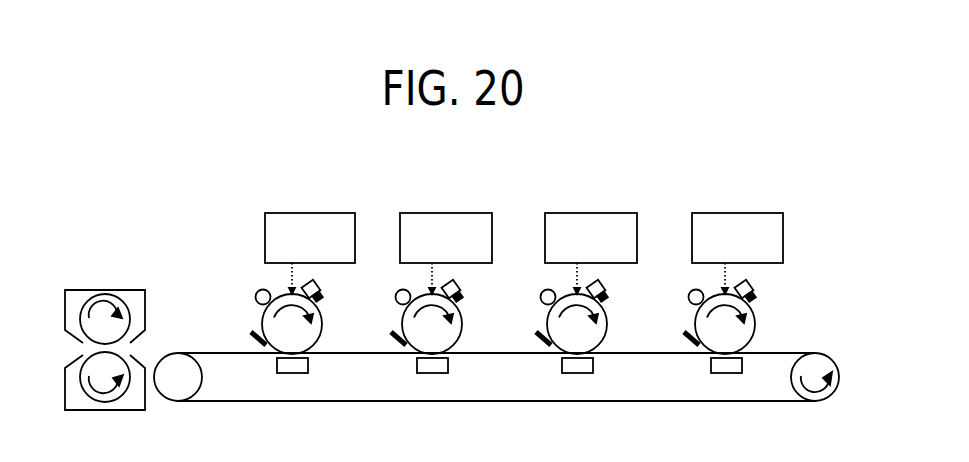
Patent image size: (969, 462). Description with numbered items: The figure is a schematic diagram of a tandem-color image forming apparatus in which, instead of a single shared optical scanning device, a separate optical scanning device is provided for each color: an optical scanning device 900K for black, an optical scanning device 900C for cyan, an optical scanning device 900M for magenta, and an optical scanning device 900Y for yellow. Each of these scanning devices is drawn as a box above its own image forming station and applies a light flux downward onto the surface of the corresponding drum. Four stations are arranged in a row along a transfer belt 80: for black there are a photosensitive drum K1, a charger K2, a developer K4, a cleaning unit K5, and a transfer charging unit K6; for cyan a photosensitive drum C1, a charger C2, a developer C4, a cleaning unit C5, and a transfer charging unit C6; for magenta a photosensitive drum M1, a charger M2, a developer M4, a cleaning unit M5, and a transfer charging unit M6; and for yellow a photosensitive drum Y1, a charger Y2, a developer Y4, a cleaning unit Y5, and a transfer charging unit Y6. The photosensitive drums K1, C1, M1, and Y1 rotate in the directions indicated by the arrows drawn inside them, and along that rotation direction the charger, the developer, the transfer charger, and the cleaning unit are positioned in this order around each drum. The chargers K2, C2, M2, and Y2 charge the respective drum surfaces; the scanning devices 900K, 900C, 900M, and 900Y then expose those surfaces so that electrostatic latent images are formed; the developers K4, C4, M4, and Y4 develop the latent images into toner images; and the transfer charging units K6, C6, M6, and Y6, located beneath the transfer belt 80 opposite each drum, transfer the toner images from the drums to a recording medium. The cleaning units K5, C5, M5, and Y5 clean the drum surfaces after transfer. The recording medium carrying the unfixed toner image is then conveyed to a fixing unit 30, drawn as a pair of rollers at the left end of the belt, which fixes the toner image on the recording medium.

The fixing unit 30 is at (116, 288).
The transfer belt 80 is at (357, 404).
The optical scanning device for black 900K is at (317, 212).
The optical scanning device for cyan 900C is at (453, 212).
The optical scanning device for magenta 900M is at (597, 212).
The optical scanning device for yellow 900Y is at (742, 212).
The photosensitive drum K1 is at (323, 332).
The charger K2 is at (256, 292).
The developer K4 is at (323, 288).
The cleaning unit K5 is at (253, 337).
The transfer charging unit K6 is at (288, 374).
The photosensitive drum C1 is at (463, 332).
The charger C2 is at (396, 297).
The developer C4 is at (463, 288).
The cleaning unit C5 is at (400, 347).
The transfer charging unit C6 is at (432, 374).
The photosensitive drum M1 is at (608, 332).
The charger M2 is at (541, 297).
The developer M4 is at (608, 288).
The cleaning unit M5 is at (544, 348).
The transfer charging unit M6 is at (577, 374).
The photosensitive drum Y1 is at (757, 325).
The charger Y2 is at (689, 297).
The developer Y4 is at (756, 288).
The cleaning unit Y5 is at (692, 348).
The transfer charging unit Y6 is at (726, 374).